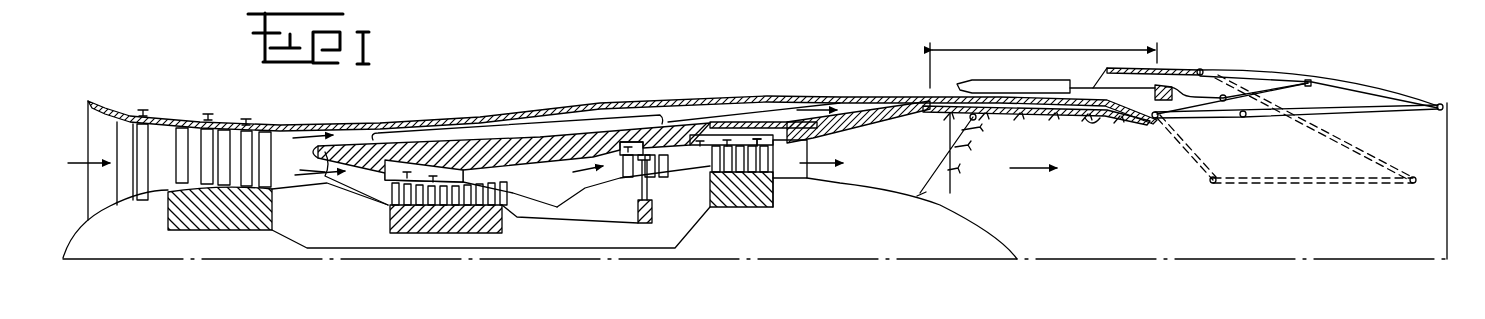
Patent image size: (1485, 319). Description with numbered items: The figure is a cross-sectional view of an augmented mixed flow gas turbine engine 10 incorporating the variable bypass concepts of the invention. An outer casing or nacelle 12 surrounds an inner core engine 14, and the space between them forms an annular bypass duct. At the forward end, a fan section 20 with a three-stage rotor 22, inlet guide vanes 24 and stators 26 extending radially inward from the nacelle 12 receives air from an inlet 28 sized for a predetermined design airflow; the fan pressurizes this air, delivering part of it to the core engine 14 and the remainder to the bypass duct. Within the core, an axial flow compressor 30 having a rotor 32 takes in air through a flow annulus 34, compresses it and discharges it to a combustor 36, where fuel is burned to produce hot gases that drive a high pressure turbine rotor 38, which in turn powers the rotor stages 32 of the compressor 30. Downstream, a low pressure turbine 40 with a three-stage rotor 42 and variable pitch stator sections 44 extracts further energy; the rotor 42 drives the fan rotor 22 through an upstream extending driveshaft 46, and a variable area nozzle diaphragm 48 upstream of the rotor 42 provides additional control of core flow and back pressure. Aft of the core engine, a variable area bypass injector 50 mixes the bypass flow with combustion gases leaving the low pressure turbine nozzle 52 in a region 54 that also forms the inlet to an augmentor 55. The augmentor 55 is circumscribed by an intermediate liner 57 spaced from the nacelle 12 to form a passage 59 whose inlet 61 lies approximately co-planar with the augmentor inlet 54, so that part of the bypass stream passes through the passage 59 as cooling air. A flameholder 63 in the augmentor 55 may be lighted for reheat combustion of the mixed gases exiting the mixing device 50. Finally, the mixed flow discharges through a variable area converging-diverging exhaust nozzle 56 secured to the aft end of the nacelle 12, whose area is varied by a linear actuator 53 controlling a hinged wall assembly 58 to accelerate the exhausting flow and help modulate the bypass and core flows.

The mixed flow gas turbine engine 10 is at (450, 91).
The outer casing or nacelle 12 is at (579, 108).
The inner core engine 14 is at (530, 122).
The fan section 20 is at (224, 110).
The three-stage rotor 22 is at (218, 226).
The inlet guide vanes 24 is at (152, 130).
The stators 26 is at (250, 138).
The inlet 28 is at (101, 184).
The axial flow compressor 30 is at (382, 208).
The compressor rotor 32 is at (497, 229).
The flow annulus 34 is at (360, 186).
The combustor 36 is at (568, 197).
The high pressure turbine rotor 38 is at (653, 216).
The low pressure turbine 40 is at (701, 179).
The low pressure turbine rotor 42 is at (733, 208).
The variable pitch stator sections 44 is at (760, 138).
The driveshaft 46 is at (573, 250).
The variable area nozzle diaphragm 48 is at (714, 128).
The variable area bypass injector 50 is at (862, 112).
The low pressure turbine nozzle 52 is at (812, 153).
The linear actuator 53 is at (1050, 79).
The mixing region 54 is at (900, 166).
The augmentor 55 is at (1043, 64).
The variable area converging-diverging exhaust nozzle 56 is at (1212, 123).
The intermediate nacelle or liner 57 is at (1053, 118).
The hinged wall assembly 58 is at (1302, 115).
The passage 59 is at (1089, 119).
The passage inlet 61 is at (883, 107).
The flameholder 63 is at (978, 142).